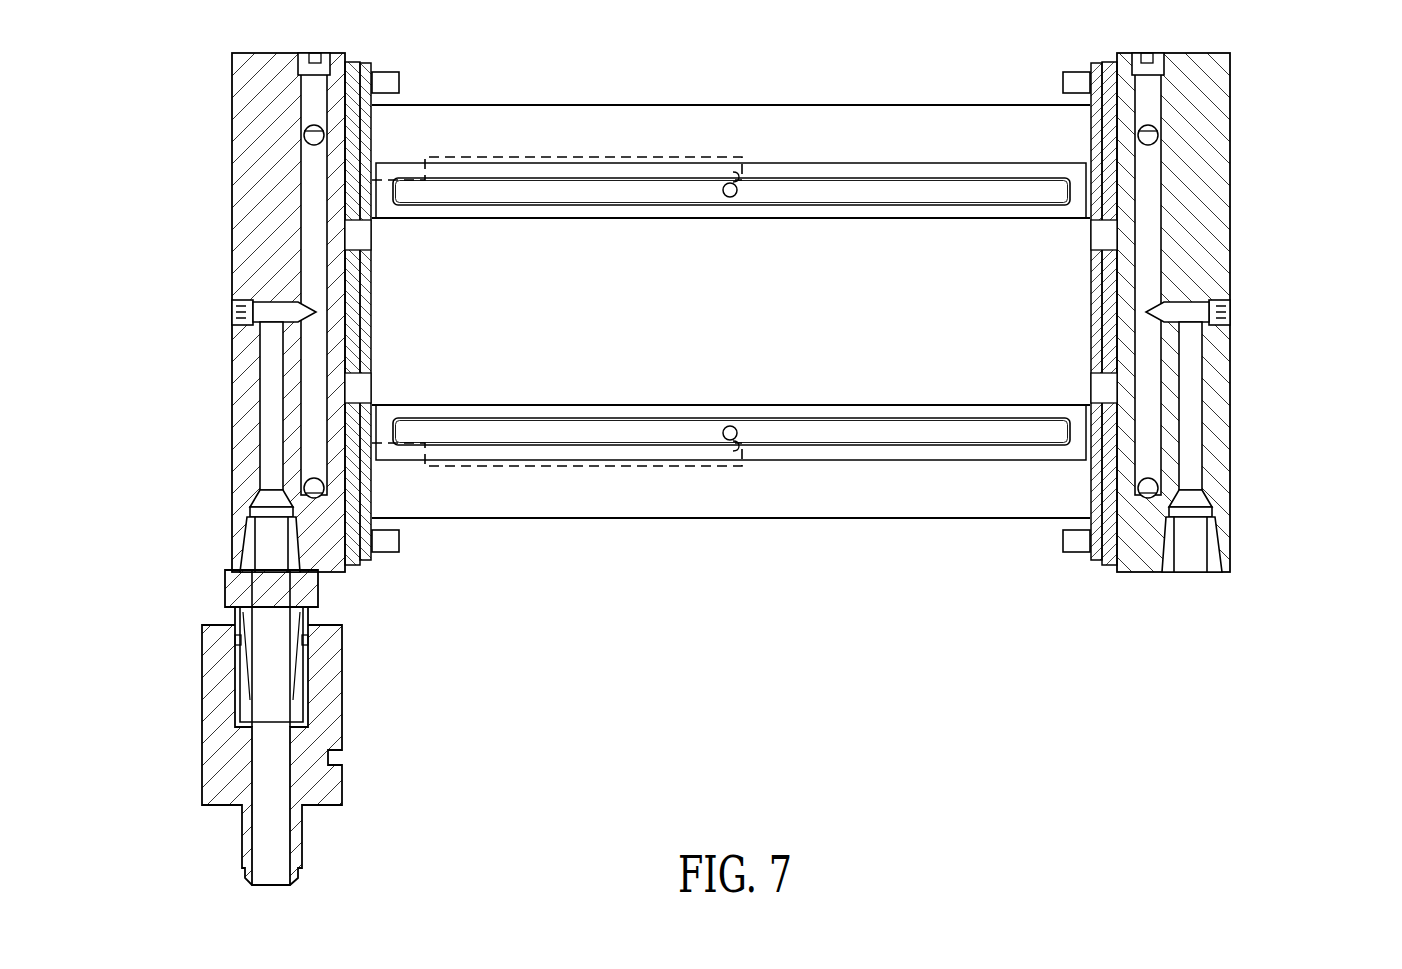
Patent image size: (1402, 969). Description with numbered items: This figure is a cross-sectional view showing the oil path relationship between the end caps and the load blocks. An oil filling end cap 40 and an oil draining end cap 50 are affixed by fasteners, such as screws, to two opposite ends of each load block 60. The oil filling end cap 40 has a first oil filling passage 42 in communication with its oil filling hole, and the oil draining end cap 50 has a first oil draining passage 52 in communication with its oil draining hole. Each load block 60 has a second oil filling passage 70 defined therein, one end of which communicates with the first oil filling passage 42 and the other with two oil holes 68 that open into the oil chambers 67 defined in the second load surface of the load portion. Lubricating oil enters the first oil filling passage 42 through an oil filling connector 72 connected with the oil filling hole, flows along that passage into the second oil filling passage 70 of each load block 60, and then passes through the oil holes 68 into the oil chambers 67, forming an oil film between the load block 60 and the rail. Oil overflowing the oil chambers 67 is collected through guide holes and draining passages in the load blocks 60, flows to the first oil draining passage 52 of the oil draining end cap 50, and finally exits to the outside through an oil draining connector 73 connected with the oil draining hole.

The oil filling end cap 40 is at (250, 92).
The first oil filling passage 42 is at (286, 208).
The oil draining end cap 50 is at (1222, 80).
The first oil draining passage 52 is at (1172, 190).
The load block 60 is at (921, 88).
The oil chamber 67 is at (808, 185).
The oil hole 68 is at (737, 186).
The second oil filling passage 70 is at (510, 157).
The oil filling connector 72 is at (183, 779).
The oil draining connector 73 is at (1297, 779).